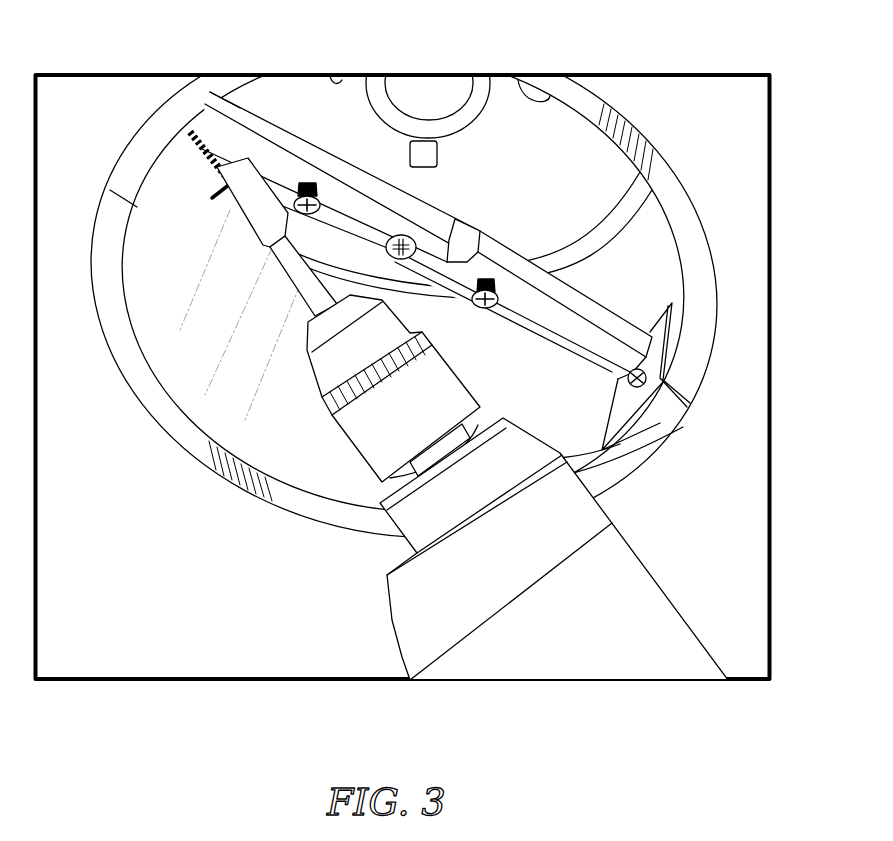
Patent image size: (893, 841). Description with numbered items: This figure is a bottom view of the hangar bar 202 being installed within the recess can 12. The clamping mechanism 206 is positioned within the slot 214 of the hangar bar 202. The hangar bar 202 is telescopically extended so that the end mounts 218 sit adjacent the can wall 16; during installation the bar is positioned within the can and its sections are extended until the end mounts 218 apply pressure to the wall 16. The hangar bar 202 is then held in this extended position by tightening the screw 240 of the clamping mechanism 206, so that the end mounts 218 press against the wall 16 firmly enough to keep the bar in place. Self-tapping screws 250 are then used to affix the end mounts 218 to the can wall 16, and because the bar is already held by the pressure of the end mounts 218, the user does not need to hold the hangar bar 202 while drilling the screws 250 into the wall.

The recess can 12 is at (207, 97).
The can wall 16 is at (223, 415).
The hangar bar 202 is at (327, 150).
The clamping mechanism 206 is at (445, 267).
The slot 214 is at (573, 333).
The end mounts 218 is at (152, 150).
The screw 240 is at (413, 222).
The self-tapping screws 250 is at (214, 167).